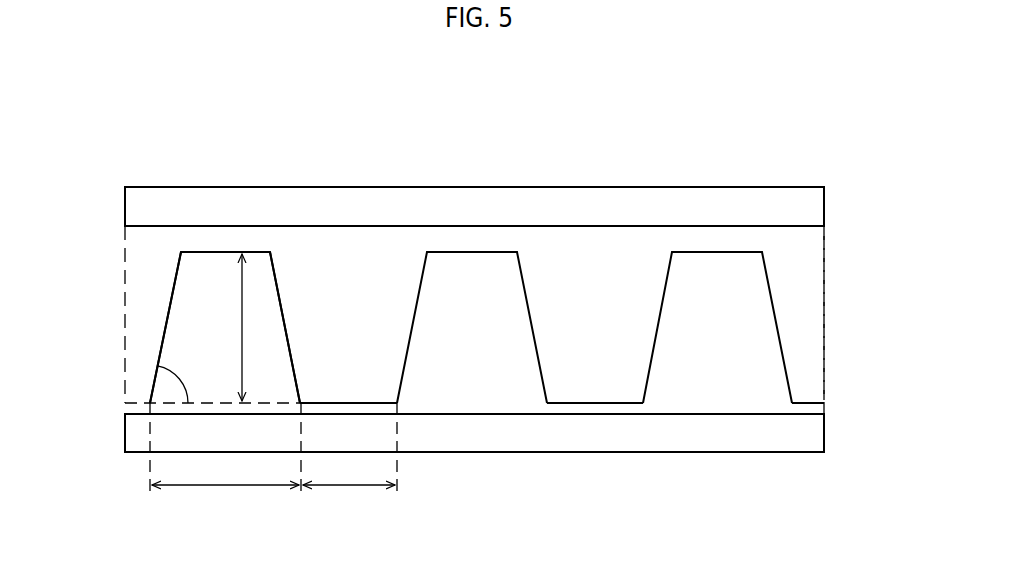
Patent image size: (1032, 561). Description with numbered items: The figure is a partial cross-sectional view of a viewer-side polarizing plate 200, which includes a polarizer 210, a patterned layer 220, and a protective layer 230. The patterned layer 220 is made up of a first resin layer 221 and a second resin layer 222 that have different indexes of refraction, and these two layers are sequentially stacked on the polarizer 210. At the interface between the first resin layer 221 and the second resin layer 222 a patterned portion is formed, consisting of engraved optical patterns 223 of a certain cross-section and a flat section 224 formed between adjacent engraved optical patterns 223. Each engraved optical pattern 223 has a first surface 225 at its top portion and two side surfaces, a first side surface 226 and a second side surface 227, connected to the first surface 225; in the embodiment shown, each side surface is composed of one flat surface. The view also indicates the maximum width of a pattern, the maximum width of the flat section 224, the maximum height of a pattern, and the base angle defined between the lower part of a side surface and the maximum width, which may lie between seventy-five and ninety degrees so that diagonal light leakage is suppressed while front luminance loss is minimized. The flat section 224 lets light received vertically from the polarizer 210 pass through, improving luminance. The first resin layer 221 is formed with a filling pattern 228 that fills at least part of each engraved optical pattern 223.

The viewer-side polarizing plate 200 is at (818, 172).
The polarizer 210 is at (125, 439).
The patterned layer 220 is at (108, 227).
The first resin layer 221 is at (824, 408).
The second resin layer 222 is at (824, 310).
The engraved optical patterns 223 is at (279, 270).
The flat section 224 is at (348, 403).
The first surface 225 is at (217, 252).
The first side surface 226 is at (176, 276).
The second side surface 227 is at (292, 356).
The filling pattern 228 is at (485, 398).
The protective layer 230 is at (125, 209).